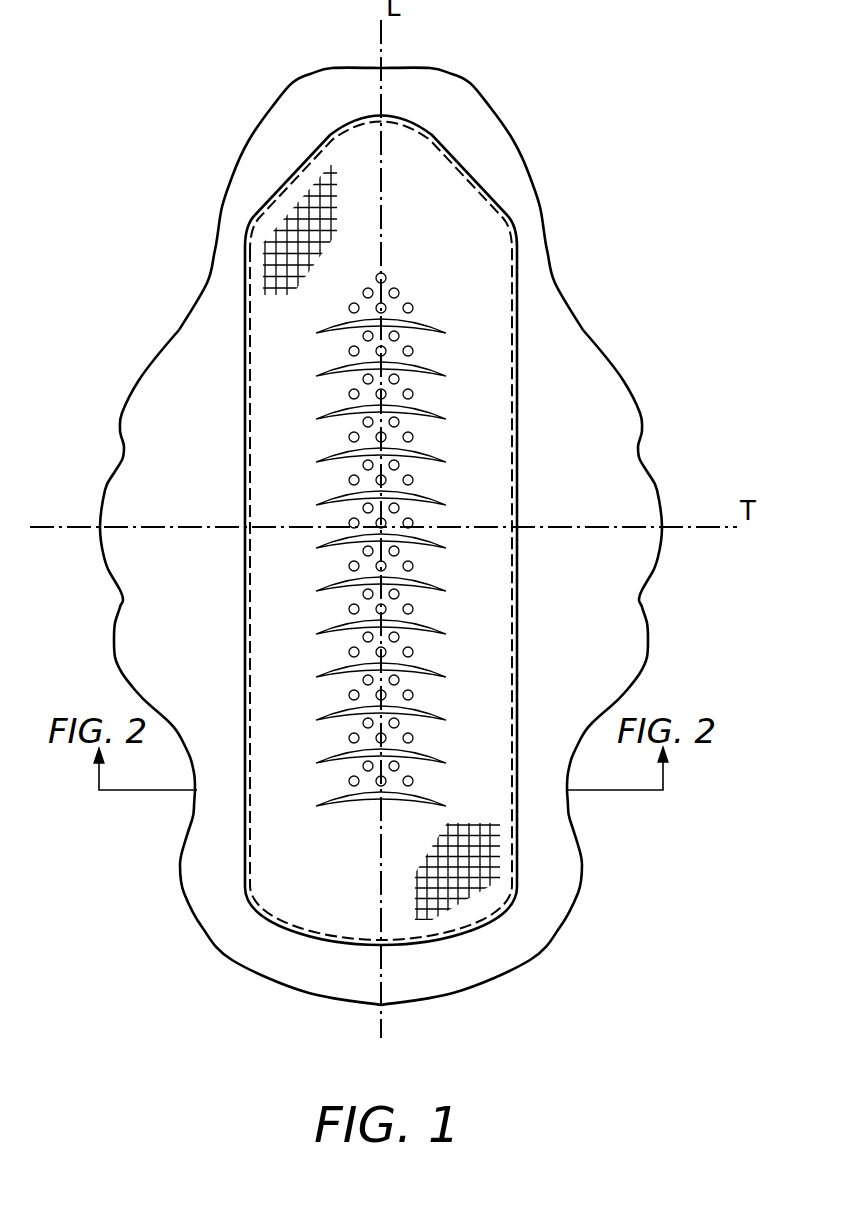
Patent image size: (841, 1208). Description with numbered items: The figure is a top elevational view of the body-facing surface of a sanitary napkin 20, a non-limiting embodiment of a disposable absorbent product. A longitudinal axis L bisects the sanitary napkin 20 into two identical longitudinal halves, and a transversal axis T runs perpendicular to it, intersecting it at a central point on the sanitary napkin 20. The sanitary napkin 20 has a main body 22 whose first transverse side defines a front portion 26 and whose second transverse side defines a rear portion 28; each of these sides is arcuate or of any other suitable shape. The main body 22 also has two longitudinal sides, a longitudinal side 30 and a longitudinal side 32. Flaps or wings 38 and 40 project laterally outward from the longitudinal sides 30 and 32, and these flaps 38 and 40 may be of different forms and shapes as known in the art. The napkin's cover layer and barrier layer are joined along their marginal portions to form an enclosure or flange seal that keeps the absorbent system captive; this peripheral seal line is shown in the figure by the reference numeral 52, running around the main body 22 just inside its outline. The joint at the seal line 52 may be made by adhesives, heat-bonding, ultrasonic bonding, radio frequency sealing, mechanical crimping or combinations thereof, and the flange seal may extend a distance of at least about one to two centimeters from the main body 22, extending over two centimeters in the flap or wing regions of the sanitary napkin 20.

The sanitary napkin 20 is at (382, 536).
The main body 22 is at (416, 546).
The front portion 26 is at (215, 223).
The rear portion 28 is at (187, 827).
The longitudinal side 30 is at (524, 296).
The longitudinal side 32 is at (241, 275).
The flap 38 is at (622, 610).
The flap 40 is at (138, 570).
The peripheral seal line 52 is at (499, 149).